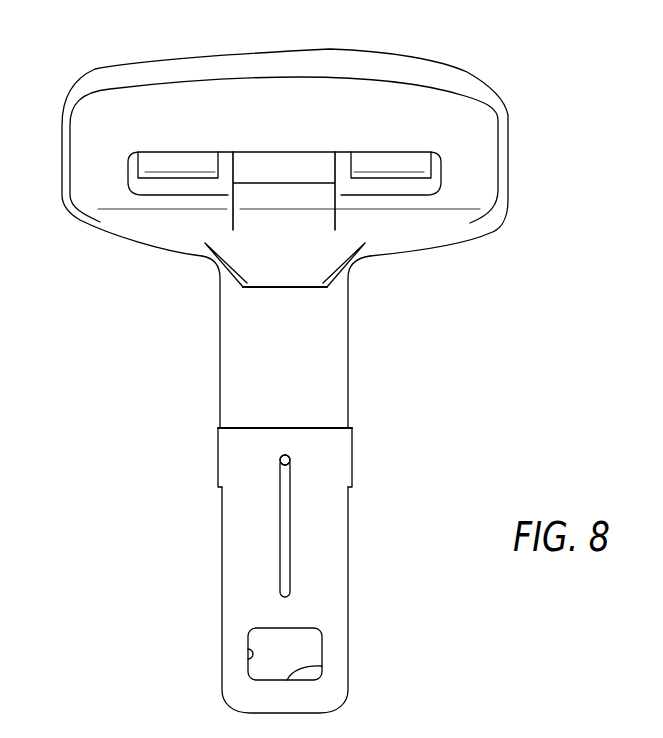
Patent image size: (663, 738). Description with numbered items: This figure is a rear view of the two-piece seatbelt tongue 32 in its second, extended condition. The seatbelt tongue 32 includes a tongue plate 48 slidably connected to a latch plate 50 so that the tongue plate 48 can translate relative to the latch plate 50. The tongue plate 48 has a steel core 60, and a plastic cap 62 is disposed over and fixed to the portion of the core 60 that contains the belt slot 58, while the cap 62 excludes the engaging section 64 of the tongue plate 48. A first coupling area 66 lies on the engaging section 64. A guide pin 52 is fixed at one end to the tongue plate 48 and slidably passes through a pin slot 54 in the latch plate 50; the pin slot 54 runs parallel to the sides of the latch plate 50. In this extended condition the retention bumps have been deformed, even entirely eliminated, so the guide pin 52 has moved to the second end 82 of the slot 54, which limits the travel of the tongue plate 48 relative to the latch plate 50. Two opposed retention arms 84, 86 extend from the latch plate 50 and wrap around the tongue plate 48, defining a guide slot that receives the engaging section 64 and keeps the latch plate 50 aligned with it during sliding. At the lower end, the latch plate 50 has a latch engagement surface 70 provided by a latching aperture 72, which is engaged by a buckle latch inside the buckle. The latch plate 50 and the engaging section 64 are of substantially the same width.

The seatbelt tongue 32 is at (299, 360).
The tongue plate 48 is at (82, 75).
The plastic cap 62 is at (512, 135).
The belt slot 58 is at (300, 153).
The core 60 is at (362, 258).
The engaging section 64 is at (349, 372).
The first coupling area 66 is at (297, 369).
The latch plate 50 is at (350, 553).
The retention arm 86 is at (218, 457).
The retention arm 84 is at (352, 473).
The guide pin 52 is at (279, 458).
The second end of the slot 82 is at (291, 459).
The pin slot 54 is at (285, 548).
The latch engagement surface 70 is at (322, 667).
The latching aperture 72 is at (252, 655).